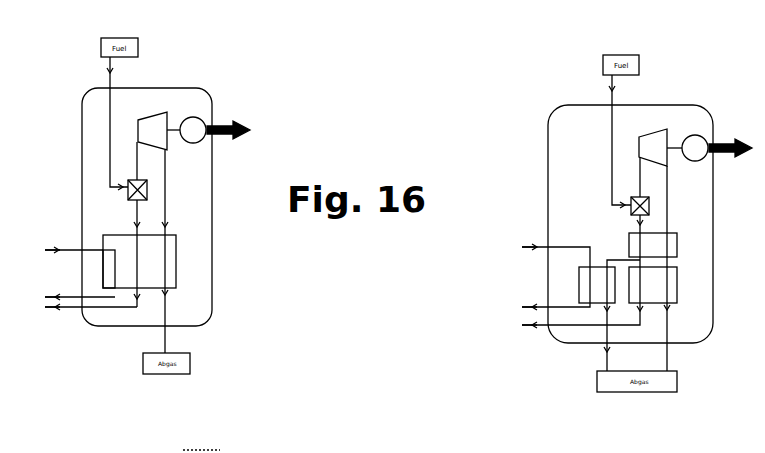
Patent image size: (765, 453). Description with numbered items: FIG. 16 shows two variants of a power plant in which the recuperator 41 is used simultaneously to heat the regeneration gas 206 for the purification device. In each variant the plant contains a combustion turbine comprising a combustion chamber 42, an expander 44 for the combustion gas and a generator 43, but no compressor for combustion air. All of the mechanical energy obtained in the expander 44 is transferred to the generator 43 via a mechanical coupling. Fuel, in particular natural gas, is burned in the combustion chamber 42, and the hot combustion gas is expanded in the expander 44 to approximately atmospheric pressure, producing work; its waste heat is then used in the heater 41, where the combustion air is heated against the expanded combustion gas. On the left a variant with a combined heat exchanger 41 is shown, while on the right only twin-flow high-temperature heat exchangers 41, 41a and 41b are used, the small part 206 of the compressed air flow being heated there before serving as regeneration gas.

The expander 44 is at (402, 139).
The generator 43 is at (459, 150).
The combustion chamber 42 is at (393, 191).
The heater 41 is at (390, 269).
The twin-flow high-temperature heat exchanger 41a is at (582, 285).
The twin-flow high-temperature heat exchanger 41b is at (638, 245).
The regeneration gas 206 is at (56, 296).